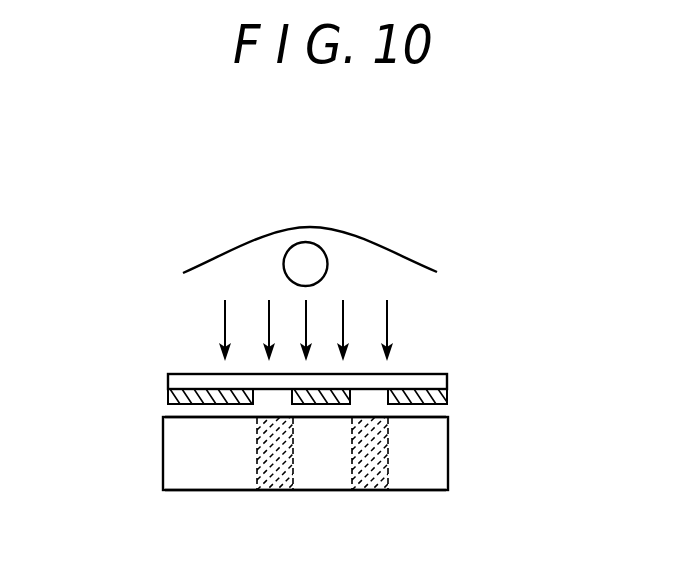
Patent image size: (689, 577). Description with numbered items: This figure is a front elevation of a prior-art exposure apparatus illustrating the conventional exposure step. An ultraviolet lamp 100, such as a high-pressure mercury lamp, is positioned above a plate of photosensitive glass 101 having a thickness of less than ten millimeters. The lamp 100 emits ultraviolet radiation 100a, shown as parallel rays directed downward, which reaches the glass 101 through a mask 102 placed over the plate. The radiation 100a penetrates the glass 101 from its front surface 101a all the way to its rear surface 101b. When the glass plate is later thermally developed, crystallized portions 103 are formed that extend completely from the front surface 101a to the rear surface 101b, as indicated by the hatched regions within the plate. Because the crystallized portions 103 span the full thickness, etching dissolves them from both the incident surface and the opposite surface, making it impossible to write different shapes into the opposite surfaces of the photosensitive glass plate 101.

The ultraviolet lamp 100 is at (402, 253).
The ultraviolet radiation 100a is at (388, 322).
The plate of photosensitive glass 101 is at (155, 450).
The front surface 101a is at (178, 417).
The rear surface 101b is at (167, 491).
The mask 102 is at (455, 388).
The crystallized portions 103 is at (265, 492).